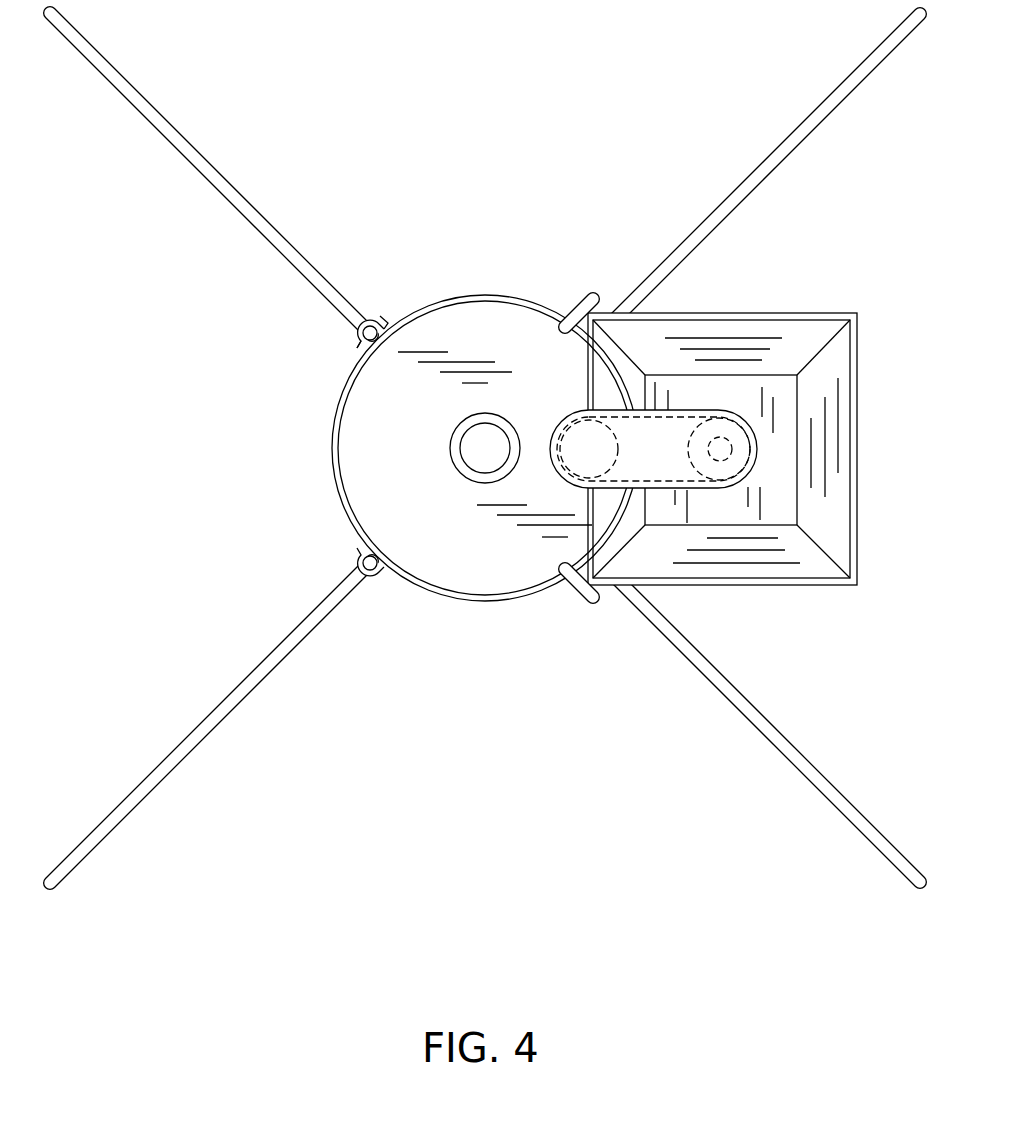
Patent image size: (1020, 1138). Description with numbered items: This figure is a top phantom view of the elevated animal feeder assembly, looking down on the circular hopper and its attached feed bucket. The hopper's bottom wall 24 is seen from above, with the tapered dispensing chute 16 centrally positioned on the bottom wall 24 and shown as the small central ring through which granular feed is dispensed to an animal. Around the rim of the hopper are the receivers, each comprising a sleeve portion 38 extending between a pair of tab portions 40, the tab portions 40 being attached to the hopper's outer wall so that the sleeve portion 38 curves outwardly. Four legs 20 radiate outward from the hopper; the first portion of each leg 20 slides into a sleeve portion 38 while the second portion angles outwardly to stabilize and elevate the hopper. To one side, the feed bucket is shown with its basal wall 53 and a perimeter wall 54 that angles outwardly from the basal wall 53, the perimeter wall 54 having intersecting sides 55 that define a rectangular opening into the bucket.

The dispensing chute 16 is at (487, 413).
The legs 20 is at (192, 158).
The bottom wall 24 is at (375, 440).
The sleeve portion 38 is at (357, 313).
The tab portions 40 is at (388, 318).
The basal wall 53 is at (772, 500).
The perimeter wall 54 is at (835, 410).
The intersecting sides 55 is at (753, 335).